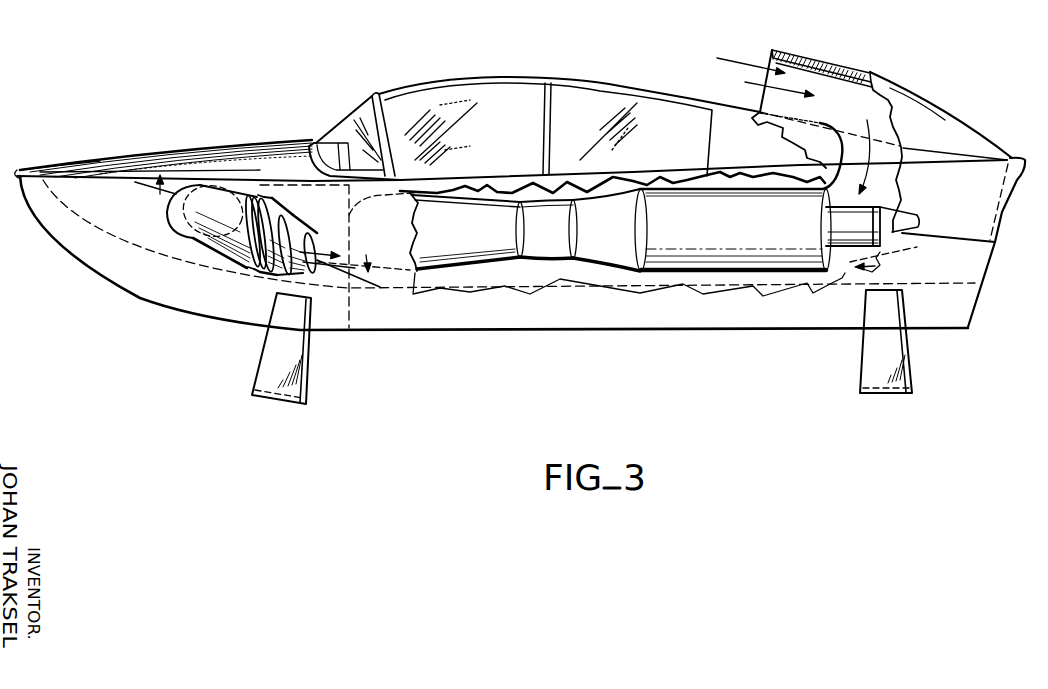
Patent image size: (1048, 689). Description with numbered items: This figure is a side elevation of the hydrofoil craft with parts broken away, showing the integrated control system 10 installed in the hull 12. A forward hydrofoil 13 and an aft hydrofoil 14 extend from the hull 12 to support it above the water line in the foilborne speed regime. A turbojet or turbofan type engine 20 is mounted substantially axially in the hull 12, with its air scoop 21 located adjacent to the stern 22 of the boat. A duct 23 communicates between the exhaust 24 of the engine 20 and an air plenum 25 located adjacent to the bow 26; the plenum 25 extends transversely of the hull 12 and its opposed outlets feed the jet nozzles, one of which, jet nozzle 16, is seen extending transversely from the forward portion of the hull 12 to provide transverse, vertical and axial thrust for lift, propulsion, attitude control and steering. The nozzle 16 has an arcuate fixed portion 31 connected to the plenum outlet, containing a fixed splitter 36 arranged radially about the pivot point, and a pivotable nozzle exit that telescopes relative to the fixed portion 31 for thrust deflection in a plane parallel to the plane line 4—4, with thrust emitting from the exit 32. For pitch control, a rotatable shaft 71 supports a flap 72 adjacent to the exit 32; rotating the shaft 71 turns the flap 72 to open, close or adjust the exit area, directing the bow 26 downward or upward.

The plane line 4— 4 is at (260, 231).
The integrated control system 10 is at (254, 246).
The hull 12 is at (253, 148).
The forward hydrofoil 13 is at (310, 375).
The aft hydrofoil 14 is at (866, 356).
The jet nozzle 16 is at (262, 203).
The engine 20 is at (664, 255).
The air scoop 21 is at (768, 49).
The stern 22 is at (985, 268).
The duct 23 is at (488, 268).
The exhaust 24 is at (595, 265).
The air plenum 25 is at (371, 230).
The bow 26 is at (47, 164).
The arcuate fixed portion 31 is at (256, 232).
The nozzle exit 32 is at (297, 245).
The fixed splitter 36 is at (274, 237).
The shaft 71 is at (300, 252).
The flap 72 is at (320, 263).